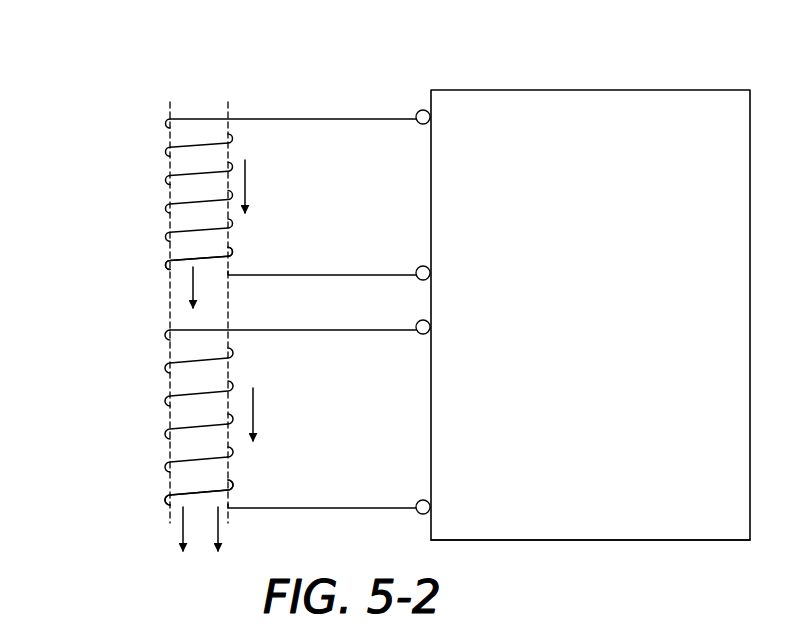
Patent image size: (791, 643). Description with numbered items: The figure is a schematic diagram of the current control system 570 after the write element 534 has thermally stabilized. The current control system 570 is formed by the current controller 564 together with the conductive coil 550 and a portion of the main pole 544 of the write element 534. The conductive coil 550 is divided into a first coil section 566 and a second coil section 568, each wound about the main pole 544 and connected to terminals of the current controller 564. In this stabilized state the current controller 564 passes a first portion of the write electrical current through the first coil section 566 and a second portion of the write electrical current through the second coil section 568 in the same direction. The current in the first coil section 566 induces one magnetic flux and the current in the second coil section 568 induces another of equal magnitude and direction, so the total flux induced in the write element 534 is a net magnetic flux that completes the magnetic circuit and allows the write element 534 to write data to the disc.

The write element 534 is at (120, 138).
The main pole 544 is at (200, 164).
The conductive coil 550 is at (216, 262).
The first coil section 566 is at (160, 120).
The second coil section 568 is at (163, 518).
The current control system 570 is at (666, 76).
The current controller 564 is at (541, 541).